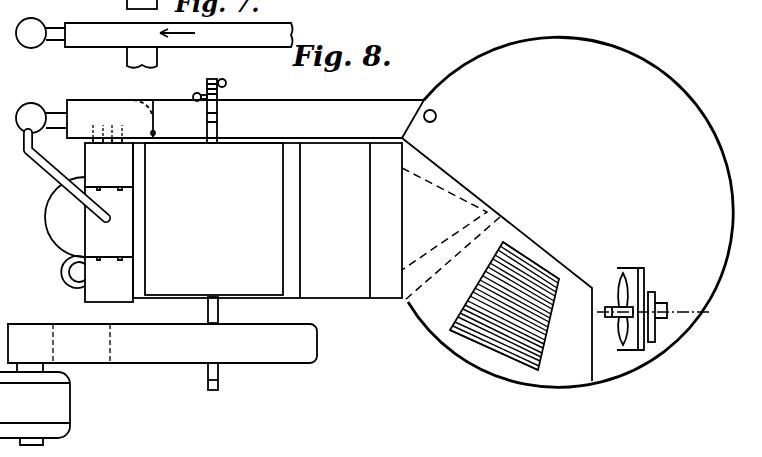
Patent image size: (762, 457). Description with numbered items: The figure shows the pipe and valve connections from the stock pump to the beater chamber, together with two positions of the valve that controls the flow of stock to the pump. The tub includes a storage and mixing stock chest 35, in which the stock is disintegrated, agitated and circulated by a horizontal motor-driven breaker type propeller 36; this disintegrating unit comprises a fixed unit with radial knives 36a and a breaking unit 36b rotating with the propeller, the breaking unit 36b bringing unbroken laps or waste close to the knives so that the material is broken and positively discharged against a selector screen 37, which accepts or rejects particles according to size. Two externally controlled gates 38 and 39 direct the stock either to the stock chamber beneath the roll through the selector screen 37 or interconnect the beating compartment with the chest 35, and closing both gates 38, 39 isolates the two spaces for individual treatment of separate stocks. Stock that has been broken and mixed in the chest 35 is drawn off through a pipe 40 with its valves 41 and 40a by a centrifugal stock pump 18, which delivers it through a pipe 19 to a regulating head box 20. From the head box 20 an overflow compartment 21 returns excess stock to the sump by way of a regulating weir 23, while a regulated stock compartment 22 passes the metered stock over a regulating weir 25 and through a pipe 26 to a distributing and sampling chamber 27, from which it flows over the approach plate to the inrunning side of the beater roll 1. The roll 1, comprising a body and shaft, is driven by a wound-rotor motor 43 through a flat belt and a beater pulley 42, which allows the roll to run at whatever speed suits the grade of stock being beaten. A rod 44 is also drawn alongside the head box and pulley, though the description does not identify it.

In FIG. 8, the beater roll body and shaft 1 is at (148, 200).
In FIG. 7, the centrifugal stock pump 18 is at (26, 44).
In FIG. 8, the centrifugal stock pump 18 is at (30, 104).
In FIG. 8, the pipe 19 is at (45, 181).
In FIG. 8, the regulating head box 20 is at (109, 222).
In FIG. 8, the overflow compartment 21 is at (88, 167).
In FIG. 8, the regulated stock compartment 22 is at (103, 302).
In FIG. 8, the regulating weir 23 is at (110, 183).
In FIG. 8, the regulating weir 25 is at (115, 249).
In FIG. 8, the pipe 26 is at (64, 275).
In FIG. 8, the distributing and sampling chamber 27 is at (65, 217).
In FIG. 8, the storage and mixing stock chest 35 is at (655, 73).
In FIG. 8, the propeller unit 36 is at (642, 274).
In FIG. 8, the radial knives 36a is at (633, 338).
In FIG. 8, the breaking unit 36b is at (658, 335).
In FIG. 8, the selector screen 37 is at (530, 317).
In FIG. 8, the gate 38 is at (430, 184).
In FIG. 8, the gate 39 is at (420, 255).
In FIG. 7, the pipe 40 is at (169, 35).
In FIG. 8, the pipe 40 is at (318, 94).
In FIG. 8, the valve 40a is at (436, 116).
In FIG. 7, the valve 41 is at (137, 47).
In FIG. 8, the valve 41 is at (133, 100).
In FIG. 8, the beater pulley 42 is at (162, 343).
In FIG. 8, the wound-rotor motor 43 is at (35, 404).
In FIG. 8, the rod 44 is at (218, 118).